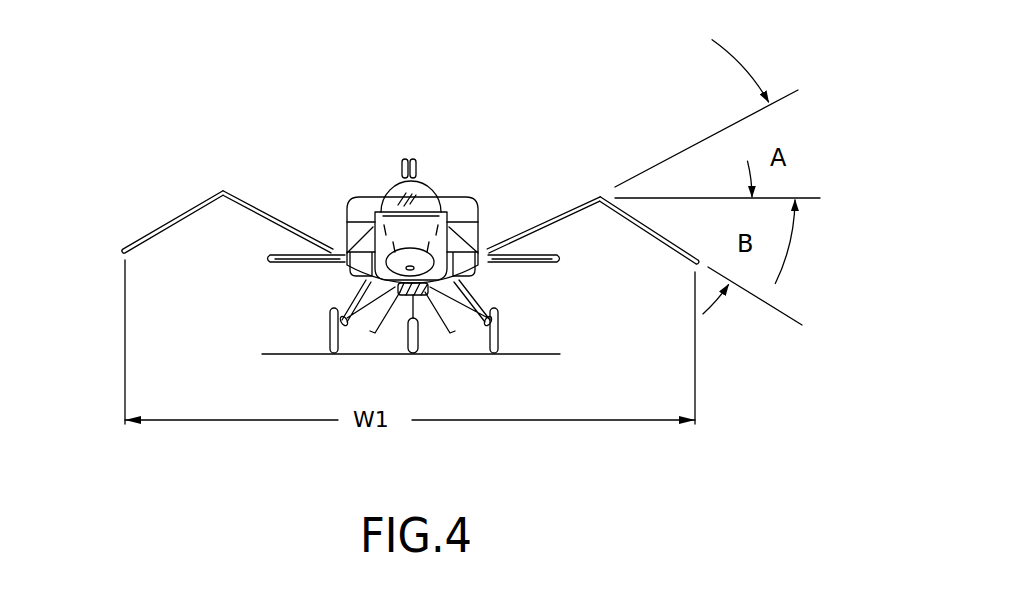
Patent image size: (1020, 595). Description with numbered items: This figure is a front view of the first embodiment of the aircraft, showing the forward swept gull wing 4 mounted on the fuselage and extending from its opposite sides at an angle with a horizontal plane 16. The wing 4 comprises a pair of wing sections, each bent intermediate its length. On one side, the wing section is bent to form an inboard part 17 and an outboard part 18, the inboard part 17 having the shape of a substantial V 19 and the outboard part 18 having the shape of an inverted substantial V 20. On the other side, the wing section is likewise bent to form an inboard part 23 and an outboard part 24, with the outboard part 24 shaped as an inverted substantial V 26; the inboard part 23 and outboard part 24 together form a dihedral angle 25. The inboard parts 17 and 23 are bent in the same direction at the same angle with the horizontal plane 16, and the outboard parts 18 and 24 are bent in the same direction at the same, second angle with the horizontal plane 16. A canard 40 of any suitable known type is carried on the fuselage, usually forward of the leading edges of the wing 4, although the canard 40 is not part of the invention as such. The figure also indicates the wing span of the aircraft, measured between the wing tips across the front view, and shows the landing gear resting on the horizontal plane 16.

The wing 4 is at (243, 198).
The horizontal plane 16 is at (530, 353).
The inboard part 17 is at (270, 226).
The outboard part 18 is at (180, 212).
The substantial V 19 is at (341, 229).
The inverted substantial V 20 is at (233, 245).
The inboard part 23 is at (592, 200).
The outboard part 24 is at (677, 252).
The dihedral angle 25 is at (527, 232).
The inverted substantial V 26 is at (613, 254).
The canard 40 is at (530, 266).